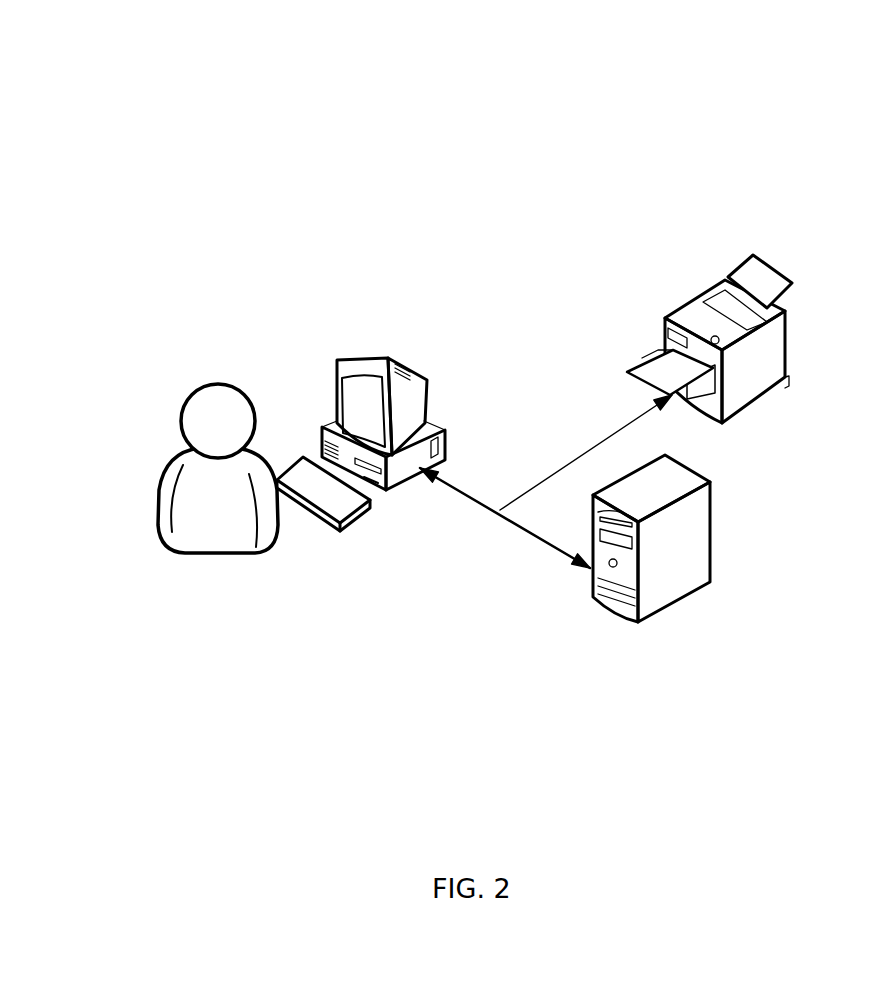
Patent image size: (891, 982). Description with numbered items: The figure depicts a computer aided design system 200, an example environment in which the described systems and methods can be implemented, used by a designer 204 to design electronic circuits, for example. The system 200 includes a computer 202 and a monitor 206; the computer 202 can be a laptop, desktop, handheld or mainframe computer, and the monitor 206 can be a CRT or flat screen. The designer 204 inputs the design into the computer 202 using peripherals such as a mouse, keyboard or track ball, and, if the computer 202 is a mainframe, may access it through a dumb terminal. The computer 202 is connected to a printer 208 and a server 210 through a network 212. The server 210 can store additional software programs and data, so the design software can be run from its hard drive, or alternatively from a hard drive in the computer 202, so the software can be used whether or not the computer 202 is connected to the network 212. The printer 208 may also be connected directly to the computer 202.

The computer aided design system 200 is at (503, 137).
The computer 202 is at (398, 487).
The designer 204 is at (217, 388).
The monitor 206 is at (355, 355).
The printer 208 is at (693, 300).
The server 210 is at (712, 531).
The network 212 is at (525, 530).